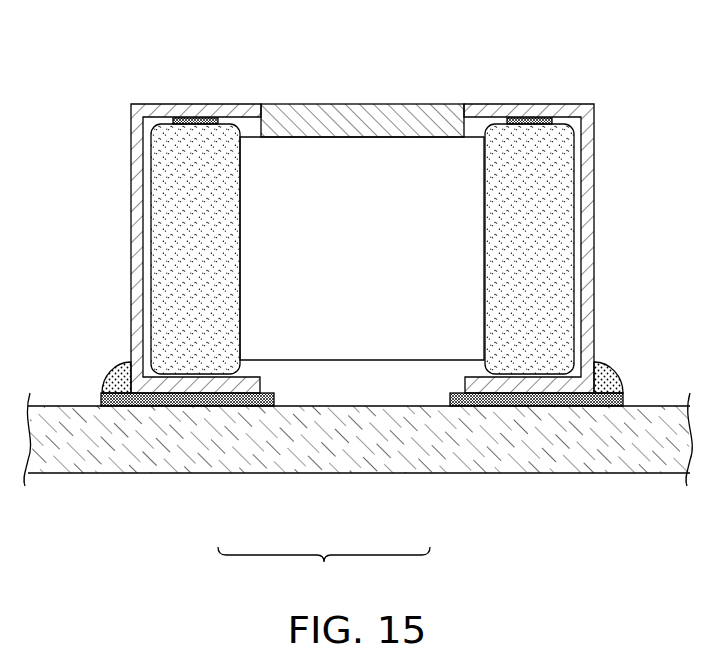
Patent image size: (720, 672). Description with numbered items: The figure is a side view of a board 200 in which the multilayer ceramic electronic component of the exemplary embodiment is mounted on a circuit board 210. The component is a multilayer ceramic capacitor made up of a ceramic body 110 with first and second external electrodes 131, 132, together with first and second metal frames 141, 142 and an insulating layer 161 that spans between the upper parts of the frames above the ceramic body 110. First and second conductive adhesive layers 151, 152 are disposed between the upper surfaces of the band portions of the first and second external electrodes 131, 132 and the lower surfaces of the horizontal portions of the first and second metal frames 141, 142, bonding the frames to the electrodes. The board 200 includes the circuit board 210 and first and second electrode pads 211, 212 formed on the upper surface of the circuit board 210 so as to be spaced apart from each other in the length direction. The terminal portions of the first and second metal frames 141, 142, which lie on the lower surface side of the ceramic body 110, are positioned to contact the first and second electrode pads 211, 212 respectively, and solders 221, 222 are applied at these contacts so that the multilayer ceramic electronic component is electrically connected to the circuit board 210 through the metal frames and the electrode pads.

The ceramic body 110 is at (419, 157).
The first external electrode 131 is at (152, 250).
The second external electrode 132 is at (573, 250).
The first metal frame 141 is at (131, 180).
The second metal frame 142 is at (594, 180).
The first conductive adhesive layer 151 is at (197, 117).
The second conductive adhesive layer 152 is at (526, 117).
The insulating layer 161 is at (356, 103).
The board 200 is at (324, 569).
The circuit board 210 is at (326, 438).
The first electrode pad 211 is at (166, 407).
The second electrode pad 212 is at (478, 407).
The solder 221 is at (112, 373).
The solder 222 is at (612, 373).